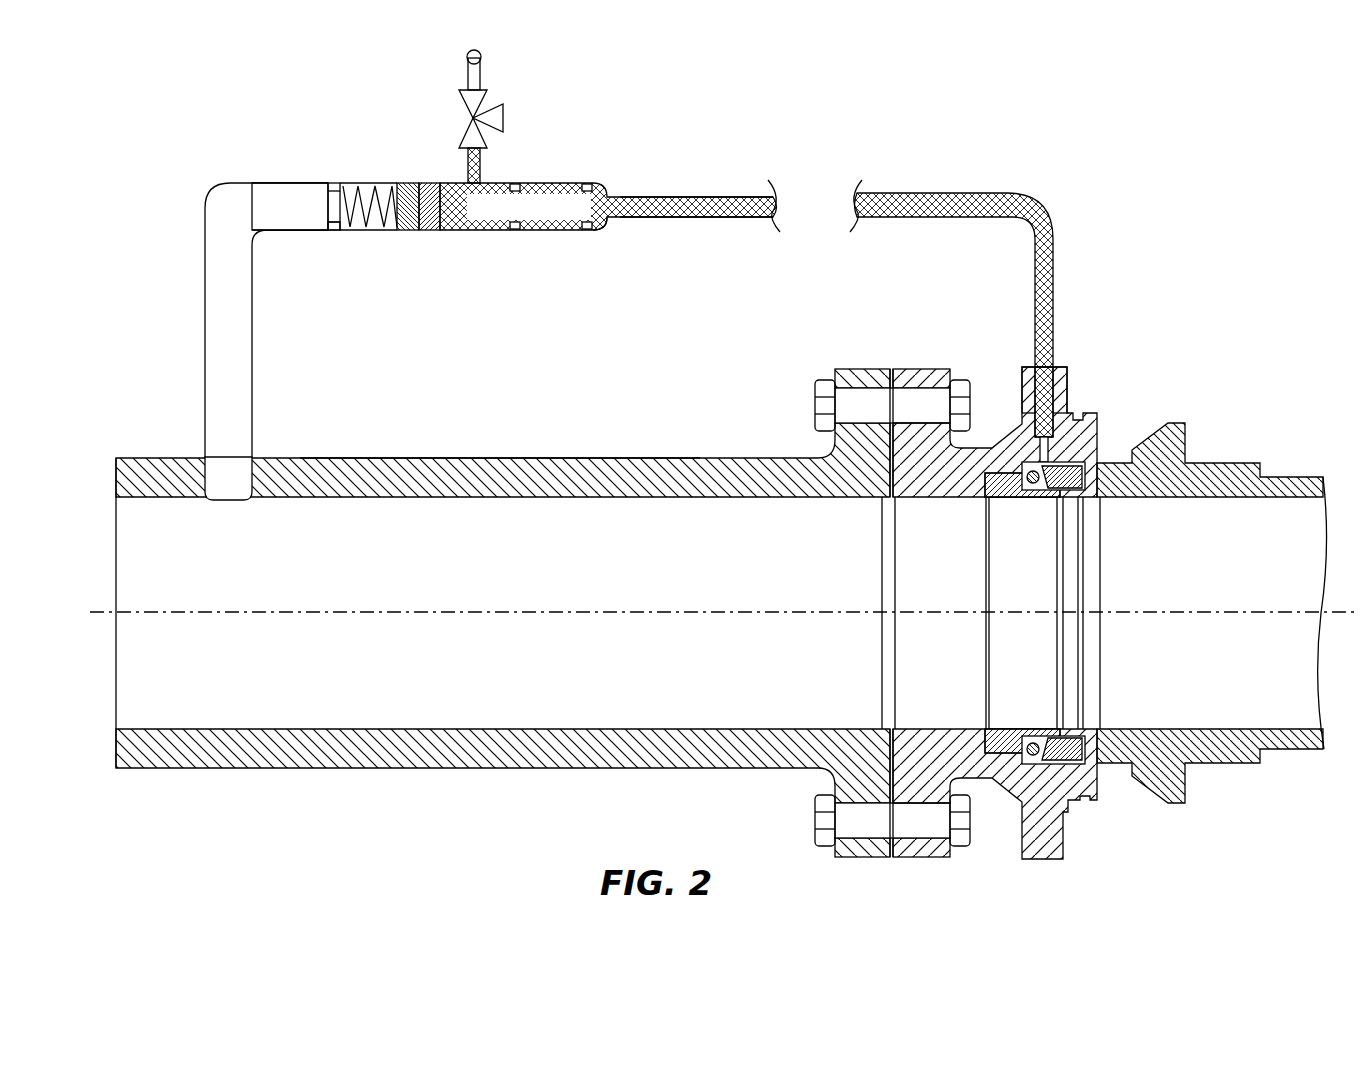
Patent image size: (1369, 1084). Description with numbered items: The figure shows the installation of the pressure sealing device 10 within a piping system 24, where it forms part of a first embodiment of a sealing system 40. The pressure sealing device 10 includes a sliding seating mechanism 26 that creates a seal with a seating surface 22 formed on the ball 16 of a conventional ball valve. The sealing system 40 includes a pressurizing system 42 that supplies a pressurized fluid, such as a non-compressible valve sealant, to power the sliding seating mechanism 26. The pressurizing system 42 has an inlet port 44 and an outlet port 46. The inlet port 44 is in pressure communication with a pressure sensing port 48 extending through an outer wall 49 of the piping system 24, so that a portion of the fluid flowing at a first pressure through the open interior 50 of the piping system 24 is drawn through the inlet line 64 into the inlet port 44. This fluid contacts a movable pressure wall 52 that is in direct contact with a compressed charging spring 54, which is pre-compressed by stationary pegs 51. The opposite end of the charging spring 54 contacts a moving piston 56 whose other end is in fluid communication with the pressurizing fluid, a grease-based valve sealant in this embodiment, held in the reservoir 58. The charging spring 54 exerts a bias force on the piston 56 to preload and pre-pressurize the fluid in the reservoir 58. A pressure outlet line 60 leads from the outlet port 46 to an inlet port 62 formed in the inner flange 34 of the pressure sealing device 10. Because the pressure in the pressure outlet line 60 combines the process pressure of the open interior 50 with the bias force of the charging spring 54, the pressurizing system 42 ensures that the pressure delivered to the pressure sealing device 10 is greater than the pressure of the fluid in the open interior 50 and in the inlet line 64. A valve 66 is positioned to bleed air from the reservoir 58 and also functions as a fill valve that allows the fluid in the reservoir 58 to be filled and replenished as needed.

The pressure sealing device 10 is at (988, 852).
The ball 16 is at (1236, 752).
The seating surface 22 is at (1100, 740).
The piping system 24 is at (447, 445).
The sliding seating mechanism 26 is at (1028, 720).
The inner flange 34 is at (1058, 838).
The sealing system 40 is at (429, 190).
The pressurizing system 42 is at (612, 165).
The inlet port 44 is at (250, 210).
The outlet port 46 is at (698, 192).
The pressure sensing port 48 is at (227, 470).
The outer wall 49 is at (600, 470).
The open interior 50 is at (346, 667).
The stationary pegs 51 is at (335, 232).
The movable pressure wall 52 is at (335, 208).
The charging spring 54 is at (372, 200).
The piston 56 is at (410, 195).
The reservoir 58 is at (607, 230).
The pressure outlet line 60 is at (1057, 272).
The inlet port 62 is at (1070, 372).
The inlet line 64 is at (235, 303).
The valve 66 is at (480, 90).